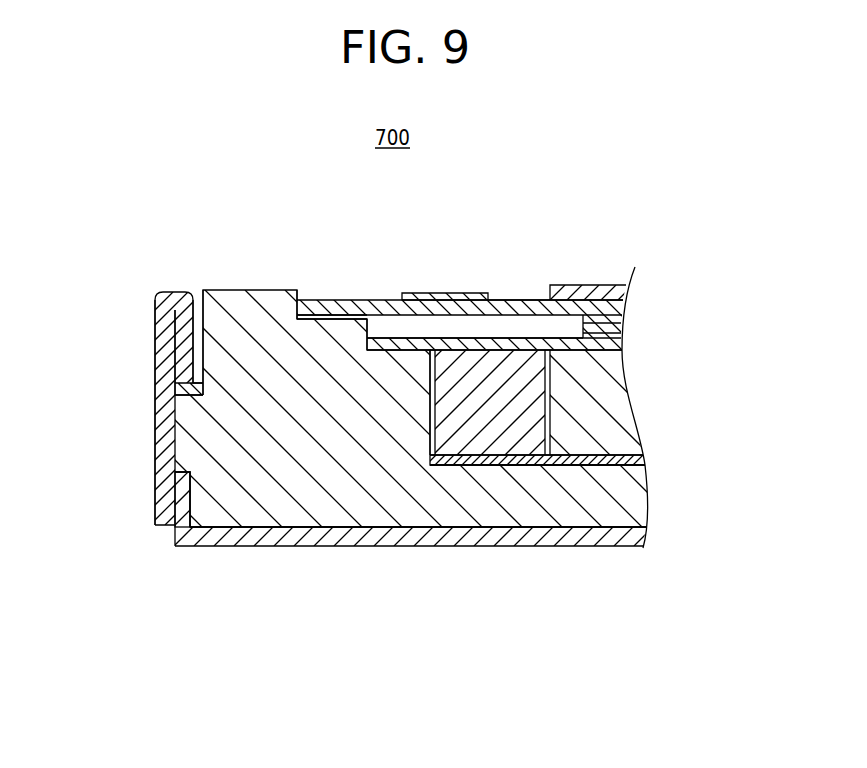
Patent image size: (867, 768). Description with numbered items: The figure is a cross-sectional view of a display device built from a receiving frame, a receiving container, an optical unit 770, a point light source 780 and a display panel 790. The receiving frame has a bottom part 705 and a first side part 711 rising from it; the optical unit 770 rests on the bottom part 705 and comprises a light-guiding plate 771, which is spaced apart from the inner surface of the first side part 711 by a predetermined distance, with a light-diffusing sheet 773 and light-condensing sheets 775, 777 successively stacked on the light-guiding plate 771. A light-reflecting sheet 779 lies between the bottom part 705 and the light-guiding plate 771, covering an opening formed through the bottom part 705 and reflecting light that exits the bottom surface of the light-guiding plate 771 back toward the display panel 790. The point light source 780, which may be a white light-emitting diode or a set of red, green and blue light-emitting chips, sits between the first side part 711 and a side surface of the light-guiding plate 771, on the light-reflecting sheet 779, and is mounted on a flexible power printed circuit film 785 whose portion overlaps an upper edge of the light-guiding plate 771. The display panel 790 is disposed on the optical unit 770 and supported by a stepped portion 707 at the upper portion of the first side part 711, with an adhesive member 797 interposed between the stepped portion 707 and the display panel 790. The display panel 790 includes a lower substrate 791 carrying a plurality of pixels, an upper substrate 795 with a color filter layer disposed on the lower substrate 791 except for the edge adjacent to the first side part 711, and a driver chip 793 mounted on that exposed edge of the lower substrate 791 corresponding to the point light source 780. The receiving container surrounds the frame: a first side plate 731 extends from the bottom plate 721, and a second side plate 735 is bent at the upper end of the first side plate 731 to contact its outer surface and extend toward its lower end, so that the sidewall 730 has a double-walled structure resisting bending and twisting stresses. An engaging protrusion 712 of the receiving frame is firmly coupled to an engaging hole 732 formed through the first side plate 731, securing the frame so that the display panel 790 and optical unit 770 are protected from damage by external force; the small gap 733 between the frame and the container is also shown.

The bottom part 705 is at (515, 503).
The stepped portion 707 is at (340, 328).
The first side part 711 is at (308, 397).
The engaging protrusion 712 is at (175, 420).
The bottom plate 721 is at (425, 540).
The sidewall 730 is at (60, 450).
The first side plate 731 is at (185, 507).
The engaging hole 732 is at (175, 388).
The gap 733 is at (201, 381).
The second side plate 735 is at (175, 458).
The optical unit 770 is at (722, 300).
The light-guiding plate 771 is at (621, 407).
The light-diffusing sheet 773 is at (622, 345).
The light-condensing sheet 775 is at (622, 332).
The light-condensing sheet 777 is at (623, 319).
The light-reflecting sheet 779 is at (642, 460).
The point light source 780 is at (470, 372).
The power printed circuit film 785 is at (388, 314).
The display panel 790 is at (593, 233).
The lower substrate 791 is at (528, 310).
The driver chip 793 is at (478, 292).
The upper substrate 795 is at (573, 286).
The adhesive member 797 is at (347, 313).